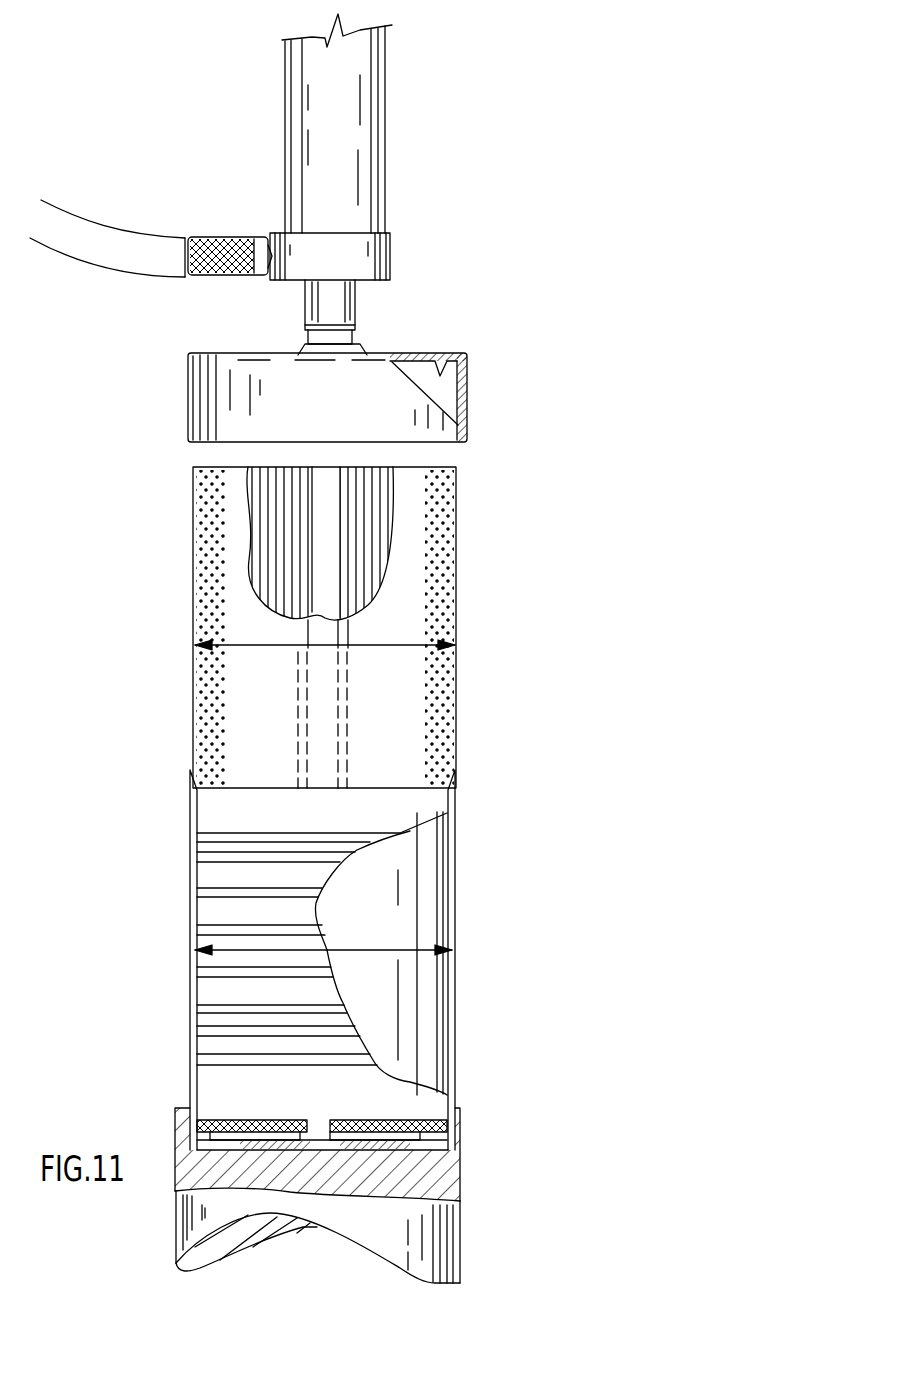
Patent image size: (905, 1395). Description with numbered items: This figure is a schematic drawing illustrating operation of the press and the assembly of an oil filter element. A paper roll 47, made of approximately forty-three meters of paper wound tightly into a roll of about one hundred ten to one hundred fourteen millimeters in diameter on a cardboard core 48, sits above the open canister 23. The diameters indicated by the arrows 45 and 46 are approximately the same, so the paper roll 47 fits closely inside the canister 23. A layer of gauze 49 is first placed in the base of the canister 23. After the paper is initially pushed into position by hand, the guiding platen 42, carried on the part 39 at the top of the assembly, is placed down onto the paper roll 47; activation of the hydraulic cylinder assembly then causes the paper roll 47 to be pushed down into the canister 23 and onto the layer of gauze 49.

The tube 39 is at (365, 155).
The guiding platen 42 is at (466, 360).
The cardboard core 48 is at (347, 466).
The paper roll 47 is at (430, 543).
The arrow 45 is at (392, 645).
The canister 23 is at (193, 870).
The arrow 46 is at (380, 950).
The layer of gauze 49 is at (440, 1127).